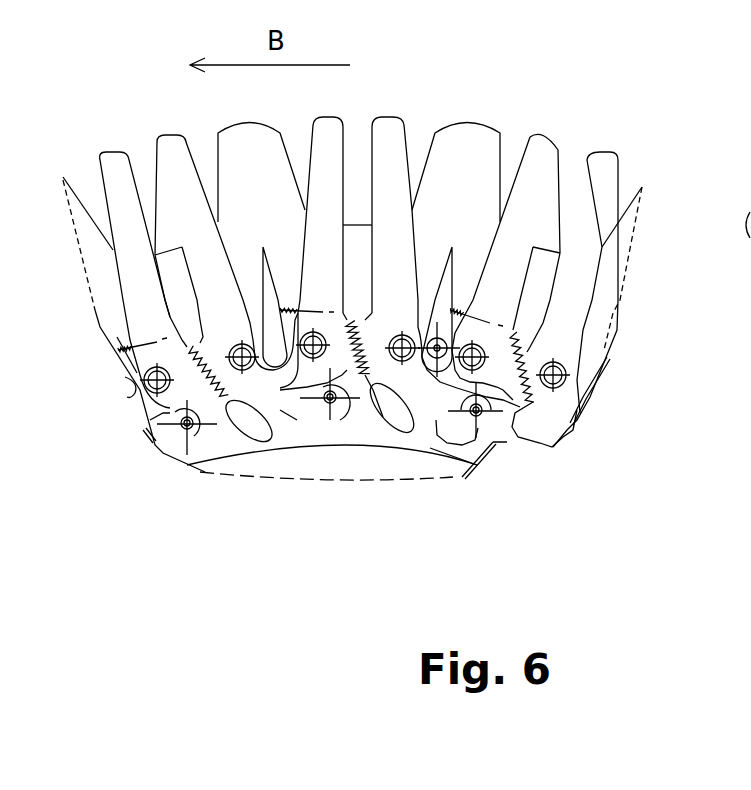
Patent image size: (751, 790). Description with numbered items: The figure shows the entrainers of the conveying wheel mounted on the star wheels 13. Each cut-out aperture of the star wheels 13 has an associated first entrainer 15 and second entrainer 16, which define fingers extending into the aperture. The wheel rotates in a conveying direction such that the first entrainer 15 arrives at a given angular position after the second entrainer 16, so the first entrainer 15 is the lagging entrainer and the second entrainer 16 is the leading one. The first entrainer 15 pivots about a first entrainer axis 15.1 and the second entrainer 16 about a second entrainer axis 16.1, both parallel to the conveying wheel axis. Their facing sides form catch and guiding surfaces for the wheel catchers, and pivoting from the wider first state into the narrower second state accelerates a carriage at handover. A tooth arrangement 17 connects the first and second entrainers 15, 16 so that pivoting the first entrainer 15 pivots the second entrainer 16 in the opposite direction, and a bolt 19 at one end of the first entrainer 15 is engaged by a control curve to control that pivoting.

The star wheel 13 is at (482, 150).
The first entrainer 15 is at (392, 162).
The second entrainer 16 is at (327, 132).
The first entrainer axis 15.1 is at (402, 348).
The second entrainer axis 16.1 is at (313, 345).
The tooth arrangement 17 is at (361, 375).
The bolt 19 is at (476, 410).